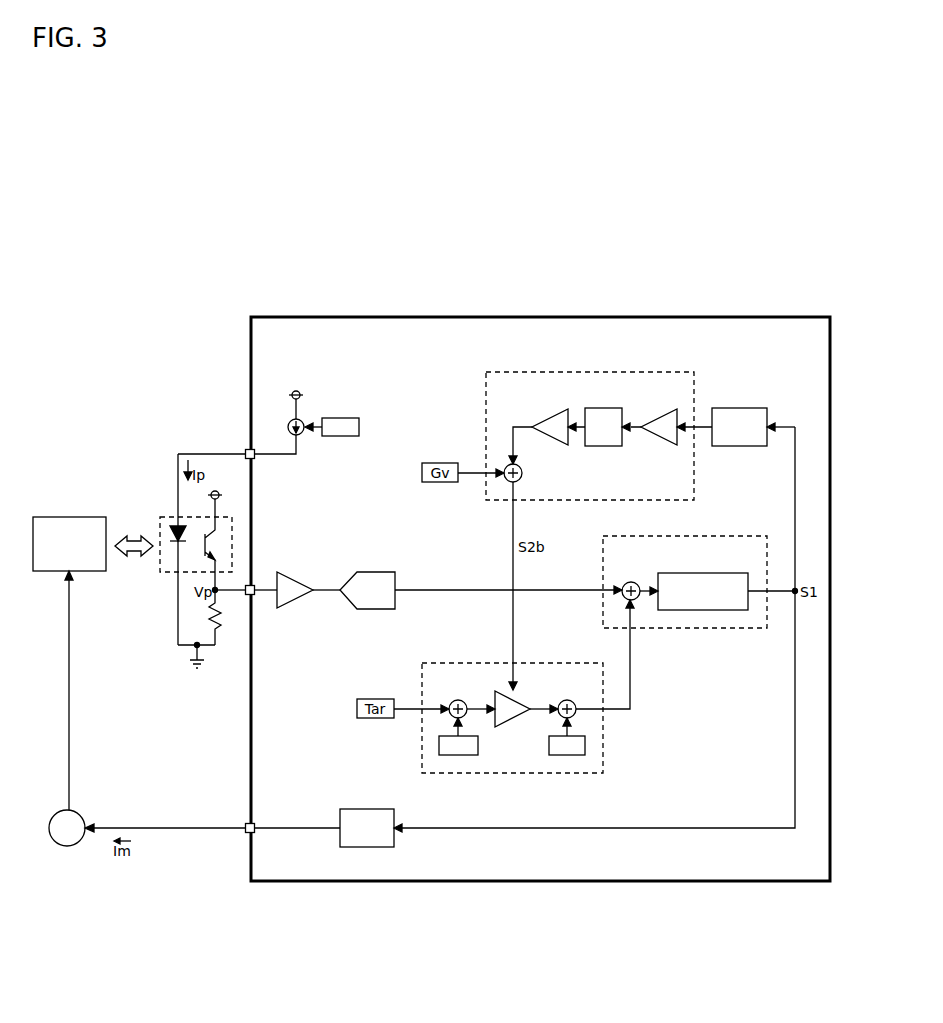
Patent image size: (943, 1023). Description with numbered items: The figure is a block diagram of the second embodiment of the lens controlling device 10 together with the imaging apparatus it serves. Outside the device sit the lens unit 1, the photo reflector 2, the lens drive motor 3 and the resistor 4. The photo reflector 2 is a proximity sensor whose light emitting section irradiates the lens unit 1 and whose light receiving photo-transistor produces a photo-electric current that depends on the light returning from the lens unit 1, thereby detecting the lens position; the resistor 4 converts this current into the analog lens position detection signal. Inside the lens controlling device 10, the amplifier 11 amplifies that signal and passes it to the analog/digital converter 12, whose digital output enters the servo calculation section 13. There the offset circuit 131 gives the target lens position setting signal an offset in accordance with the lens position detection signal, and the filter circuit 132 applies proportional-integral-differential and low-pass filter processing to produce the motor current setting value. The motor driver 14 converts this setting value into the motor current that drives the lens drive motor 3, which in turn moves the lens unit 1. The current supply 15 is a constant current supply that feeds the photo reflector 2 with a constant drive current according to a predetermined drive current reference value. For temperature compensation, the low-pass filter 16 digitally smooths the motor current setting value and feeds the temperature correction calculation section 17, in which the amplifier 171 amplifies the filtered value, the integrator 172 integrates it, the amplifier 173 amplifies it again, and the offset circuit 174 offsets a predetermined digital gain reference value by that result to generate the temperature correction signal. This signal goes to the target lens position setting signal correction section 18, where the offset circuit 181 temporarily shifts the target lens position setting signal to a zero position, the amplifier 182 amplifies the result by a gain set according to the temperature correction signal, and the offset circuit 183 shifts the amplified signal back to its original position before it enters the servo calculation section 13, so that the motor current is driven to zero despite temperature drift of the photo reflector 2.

The lens unit 1 is at (72, 517).
The photo reflector 2 is at (162, 518).
The lens drive motor 3 is at (80, 815).
The resistor 4 is at (221, 615).
The lens controlling device 10 is at (541, 318).
The amplifier 11 is at (298, 580).
The analog/digital converter 12 is at (371, 572).
The servo calculation section 13 is at (690, 539).
The offset circuit 131 is at (631, 581).
The filter circuit 132 is at (707, 573).
The motor driver 14 is at (371, 811).
The current supply 15 is at (289, 427).
The low-pass filter 16 is at (743, 410).
The temperature correction calculation section 17 is at (595, 374).
The amplifier 171 is at (661, 418).
The integrator 172 is at (605, 410).
The amplifier 173 is at (553, 419).
The offset circuit 174 is at (525, 474).
The target lens position setting signal correction section 18 is at (461, 665).
The offset circuit 181 is at (460, 701).
The amplifier 182 is at (492, 727).
The offset circuit 183 is at (570, 701).